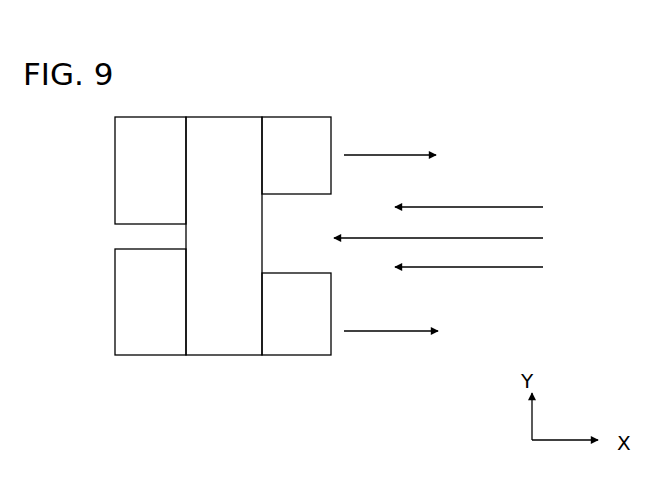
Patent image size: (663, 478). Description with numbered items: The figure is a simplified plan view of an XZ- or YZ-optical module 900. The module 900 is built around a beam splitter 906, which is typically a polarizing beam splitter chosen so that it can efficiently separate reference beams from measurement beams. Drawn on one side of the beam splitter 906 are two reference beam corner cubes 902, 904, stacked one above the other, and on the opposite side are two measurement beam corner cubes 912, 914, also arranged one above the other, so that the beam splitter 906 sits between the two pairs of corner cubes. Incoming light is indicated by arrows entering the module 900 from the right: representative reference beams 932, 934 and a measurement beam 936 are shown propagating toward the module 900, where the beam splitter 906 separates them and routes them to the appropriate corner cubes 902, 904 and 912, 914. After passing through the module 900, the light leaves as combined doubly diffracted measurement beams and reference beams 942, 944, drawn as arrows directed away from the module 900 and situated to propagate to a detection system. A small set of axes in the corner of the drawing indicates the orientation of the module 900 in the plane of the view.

The module 900 is at (424, 74).
The reference beam corner cube 902 is at (160, 166).
The reference beam corner cube 904 is at (170, 302).
The beam splitter 906 is at (237, 244).
The measurement beam corner cube 912 is at (314, 166).
The measurement beam corner cube 914 is at (316, 324).
The reference beam 932 is at (514, 267).
The reference beam 934 is at (445, 211).
The measurement beam 936 is at (393, 238).
The combined doubly diffracted measurement and reference beam 942 is at (413, 331).
The combined doubly diffracted measurement and reference beam 944 is at (372, 155).